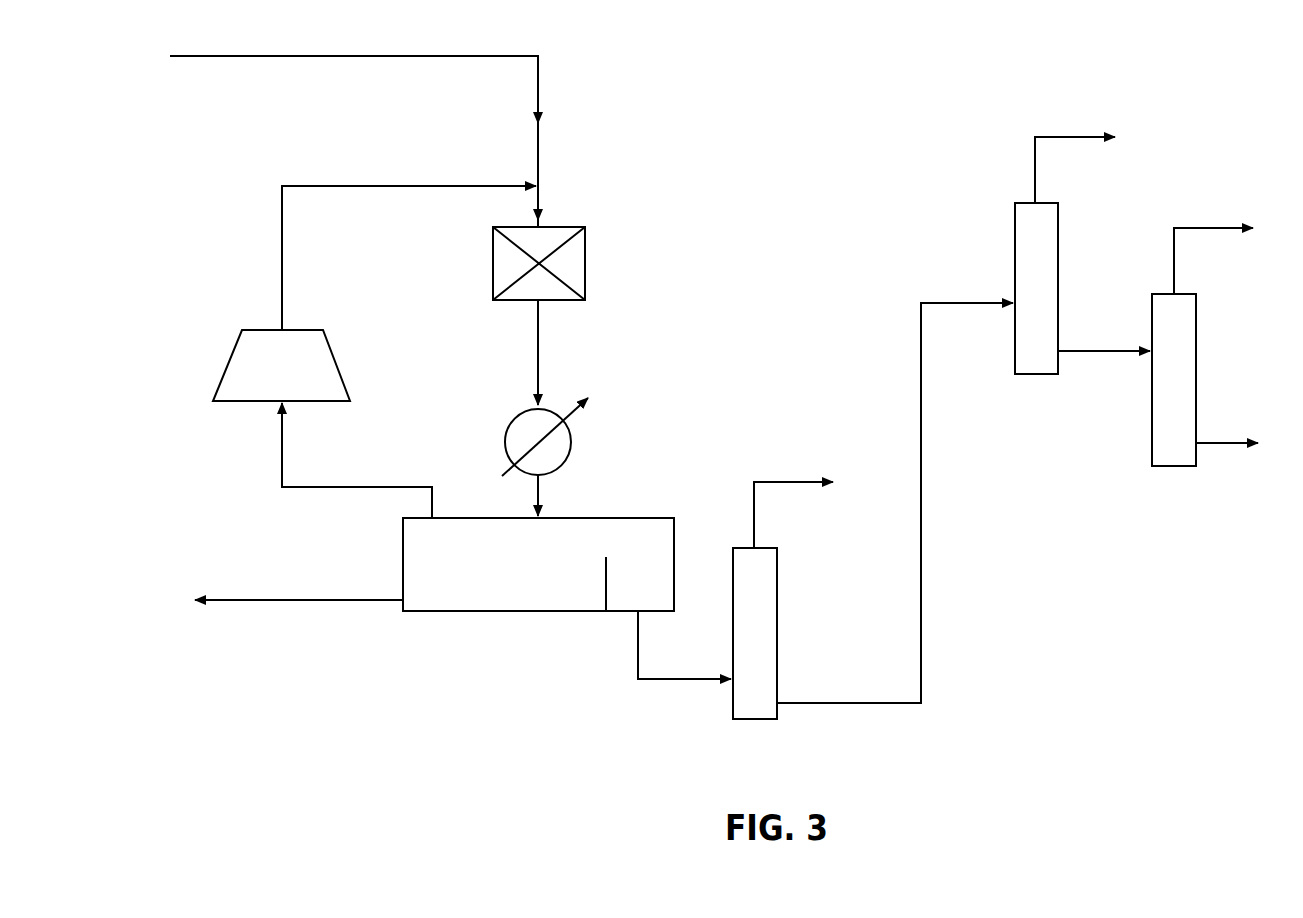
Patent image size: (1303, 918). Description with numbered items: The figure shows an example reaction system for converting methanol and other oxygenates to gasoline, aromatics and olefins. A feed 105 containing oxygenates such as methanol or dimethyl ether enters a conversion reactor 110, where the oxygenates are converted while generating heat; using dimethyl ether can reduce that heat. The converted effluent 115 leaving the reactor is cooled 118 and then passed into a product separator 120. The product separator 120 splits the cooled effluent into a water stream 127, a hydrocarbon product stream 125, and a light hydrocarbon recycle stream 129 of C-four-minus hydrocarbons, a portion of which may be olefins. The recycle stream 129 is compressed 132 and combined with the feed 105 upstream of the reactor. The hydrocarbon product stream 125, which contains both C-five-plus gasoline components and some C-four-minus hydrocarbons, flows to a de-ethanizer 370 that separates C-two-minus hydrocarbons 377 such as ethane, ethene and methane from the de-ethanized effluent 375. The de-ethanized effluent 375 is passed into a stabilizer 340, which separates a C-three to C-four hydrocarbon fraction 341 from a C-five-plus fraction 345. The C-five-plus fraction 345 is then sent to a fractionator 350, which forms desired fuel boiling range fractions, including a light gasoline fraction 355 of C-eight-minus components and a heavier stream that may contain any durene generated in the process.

The feed 105 is at (538, 90).
The conversion reactor 110 is at (585, 277).
The converted effluent 115 is at (538, 367).
The cooling 118 is at (505, 442).
The product separator 120 is at (530, 574).
The hydrocarbon product stream 125 is at (638, 648).
The water stream 127 is at (273, 600).
The light hydrocarbon recycle stream 129 is at (282, 455).
The compressor 132 is at (303, 380).
The stabilizer 340 is at (1015, 230).
The C3-C4 hydrocarbon fraction 341 is at (1065, 135).
The C5+ fraction 345 is at (1106, 353).
The fractionator 350 is at (1196, 385).
The light gasoline fraction 355 is at (1212, 445).
The de-ethanizer 370 is at (777, 585).
The de-ethanized effluent 375 is at (921, 578).
The C2- hydrocarbons 377 is at (785, 482).